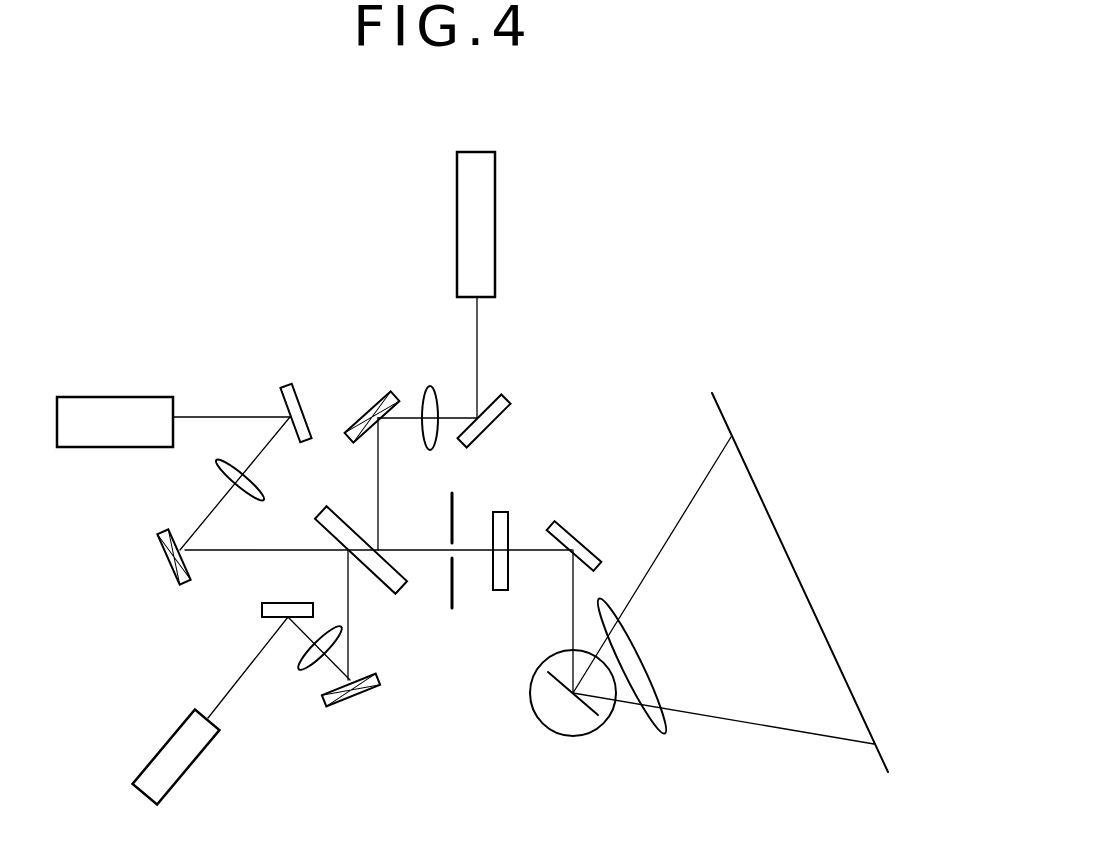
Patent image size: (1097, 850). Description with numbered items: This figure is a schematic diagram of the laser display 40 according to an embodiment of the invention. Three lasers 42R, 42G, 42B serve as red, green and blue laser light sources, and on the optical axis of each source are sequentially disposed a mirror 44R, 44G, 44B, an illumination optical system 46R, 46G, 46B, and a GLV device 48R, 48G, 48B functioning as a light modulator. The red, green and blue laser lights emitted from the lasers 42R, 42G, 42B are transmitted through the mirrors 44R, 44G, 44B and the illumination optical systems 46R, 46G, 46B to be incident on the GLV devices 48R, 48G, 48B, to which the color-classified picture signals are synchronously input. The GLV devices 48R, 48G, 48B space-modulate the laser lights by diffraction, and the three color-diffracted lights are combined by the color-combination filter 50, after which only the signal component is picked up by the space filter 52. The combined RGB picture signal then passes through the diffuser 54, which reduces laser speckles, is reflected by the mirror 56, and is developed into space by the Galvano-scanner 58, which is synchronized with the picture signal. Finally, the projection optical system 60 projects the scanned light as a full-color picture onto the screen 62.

The laser display 40 is at (645, 253).
The laser 42R is at (496, 220).
The laser 42G is at (117, 397).
The laser 42B is at (188, 778).
The mirror 44R is at (500, 415).
The mirror 44G is at (298, 386).
The mirror 44B is at (268, 622).
The illumination optical system 46R is at (430, 386).
The illumination optical system 46G is at (225, 480).
The illumination optical system 46B is at (300, 665).
The GLV device 48R is at (370, 395).
The GLV device 48G is at (160, 555).
The GLV device 48B is at (367, 697).
The color-combination filter 50 is at (405, 590).
The space filter 52 is at (453, 593).
The diffuser 54 is at (502, 590).
The mirror 56 is at (587, 542).
The Galvano-scanner 58 is at (580, 737).
The projection optical system 60 is at (668, 727).
The screen 62 is at (768, 535).